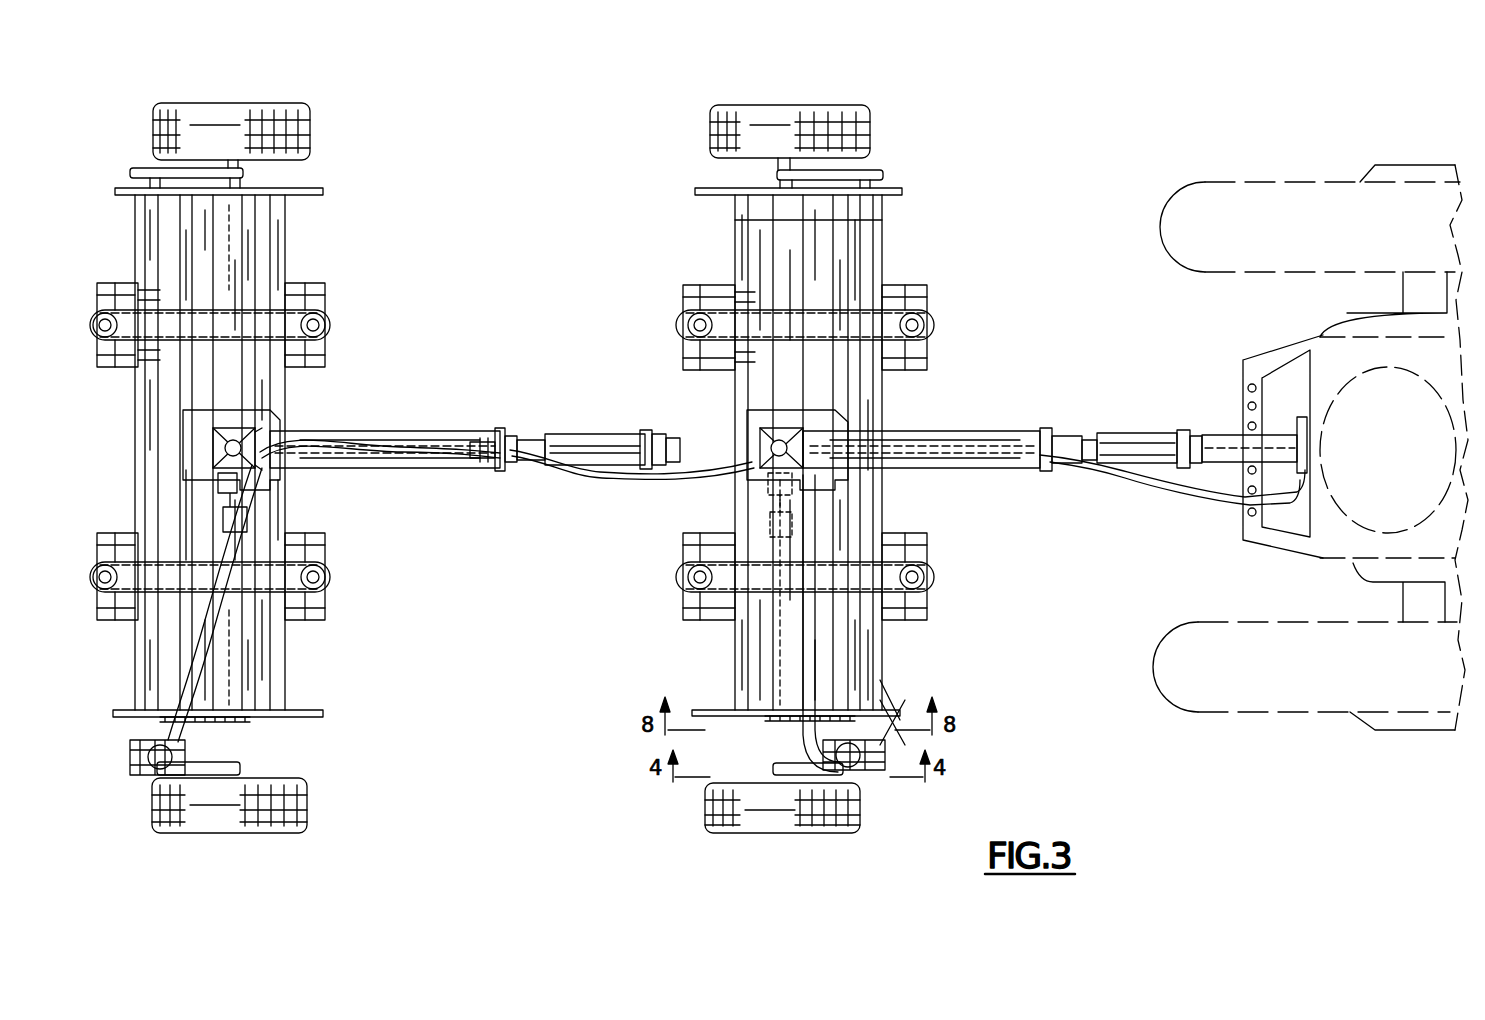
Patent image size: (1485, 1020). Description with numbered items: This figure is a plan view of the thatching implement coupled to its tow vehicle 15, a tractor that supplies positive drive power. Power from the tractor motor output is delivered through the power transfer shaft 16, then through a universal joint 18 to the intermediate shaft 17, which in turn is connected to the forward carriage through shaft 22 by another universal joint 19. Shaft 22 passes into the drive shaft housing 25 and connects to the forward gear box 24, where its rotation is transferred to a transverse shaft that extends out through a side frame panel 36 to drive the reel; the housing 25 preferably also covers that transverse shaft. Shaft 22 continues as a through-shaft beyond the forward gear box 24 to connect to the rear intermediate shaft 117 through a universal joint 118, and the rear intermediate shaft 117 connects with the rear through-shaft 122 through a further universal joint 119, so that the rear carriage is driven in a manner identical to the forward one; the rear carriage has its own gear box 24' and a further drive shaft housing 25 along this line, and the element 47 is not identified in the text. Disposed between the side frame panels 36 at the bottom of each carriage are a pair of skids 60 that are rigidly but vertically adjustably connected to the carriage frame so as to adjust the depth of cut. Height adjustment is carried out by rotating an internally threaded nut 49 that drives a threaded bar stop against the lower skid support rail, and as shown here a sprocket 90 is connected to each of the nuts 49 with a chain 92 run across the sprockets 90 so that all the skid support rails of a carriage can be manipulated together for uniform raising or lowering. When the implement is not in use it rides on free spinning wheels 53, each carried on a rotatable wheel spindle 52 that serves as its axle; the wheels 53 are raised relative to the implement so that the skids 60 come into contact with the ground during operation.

The tow vehicle 15 is at (1320, 215).
The power transfer shaft 16 is at (1225, 436).
The intermediate shaft 17 is at (1132, 433).
The universal joint 18 is at (1185, 430).
The universal joint 19 is at (1088, 436).
The shaft 22 is at (700, 462).
The forward gear box 24 is at (769, 459).
The steering block 24' is at (272, 456).
The drive shaft housing 25 is at (402, 432).
The side frame panel 36 is at (318, 195).
The steering actuator 47 is at (885, 672).
The internally threaded nut 49 is at (325, 583).
The wheel spindle 52 is at (240, 176).
The wheel 53 is at (305, 112).
The skid 60 is at (322, 285).
The sprocket 90 is at (320, 575).
The chain 92 is at (125, 300).
The rear intermediate shaft 117 is at (605, 468).
The universal joint 118 is at (665, 434).
The universal joint 119 is at (525, 462).
The rear through-shaft 122 is at (530, 432).